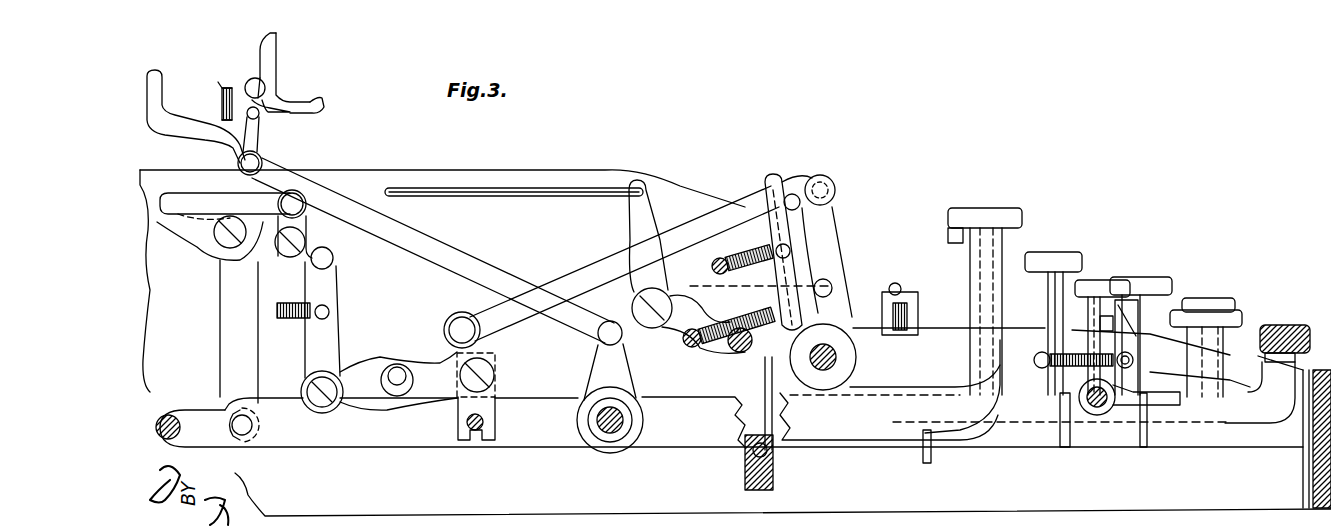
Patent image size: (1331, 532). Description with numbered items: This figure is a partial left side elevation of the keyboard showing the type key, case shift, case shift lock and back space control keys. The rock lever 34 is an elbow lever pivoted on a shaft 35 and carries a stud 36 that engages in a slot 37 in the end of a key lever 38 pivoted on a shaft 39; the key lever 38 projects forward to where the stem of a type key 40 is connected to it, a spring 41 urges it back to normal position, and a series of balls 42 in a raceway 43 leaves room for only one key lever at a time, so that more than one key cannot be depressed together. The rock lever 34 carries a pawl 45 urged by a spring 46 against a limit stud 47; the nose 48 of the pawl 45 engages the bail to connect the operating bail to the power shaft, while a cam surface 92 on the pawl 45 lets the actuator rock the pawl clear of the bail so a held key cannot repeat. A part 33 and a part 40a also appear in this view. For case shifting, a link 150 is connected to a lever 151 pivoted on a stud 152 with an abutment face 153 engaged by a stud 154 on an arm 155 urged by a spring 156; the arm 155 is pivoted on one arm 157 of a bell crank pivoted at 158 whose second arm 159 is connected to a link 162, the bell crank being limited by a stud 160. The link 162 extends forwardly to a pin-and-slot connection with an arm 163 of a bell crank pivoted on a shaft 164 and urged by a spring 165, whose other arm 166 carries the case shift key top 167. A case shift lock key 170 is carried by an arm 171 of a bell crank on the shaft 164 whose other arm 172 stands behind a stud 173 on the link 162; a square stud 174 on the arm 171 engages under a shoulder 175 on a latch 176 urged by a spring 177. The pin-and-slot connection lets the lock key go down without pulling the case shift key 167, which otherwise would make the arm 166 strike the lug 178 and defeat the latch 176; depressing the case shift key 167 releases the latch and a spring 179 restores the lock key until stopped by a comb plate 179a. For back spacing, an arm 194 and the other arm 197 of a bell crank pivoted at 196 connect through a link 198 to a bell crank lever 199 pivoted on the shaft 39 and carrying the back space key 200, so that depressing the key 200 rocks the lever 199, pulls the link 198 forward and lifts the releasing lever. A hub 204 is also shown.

The hook lever 33 is at (152, 100).
The rock lever 34 is at (228, 325).
The shaft 35 is at (170, 416).
The stud 36 is at (251, 428).
The slot 37 is at (232, 425).
The key lever 38 is at (422, 445).
The shaft 39 is at (474, 431).
The type key 40 is at (948, 232).
The key button bracket 40a is at (1267, 374).
The spring 41 is at (893, 305).
The balls 42 is at (764, 452).
The raceway 43 is at (748, 442).
The pawl 45 is at (267, 63).
The spring 46 is at (226, 94).
The limit stud 47 is at (258, 117).
The nose 48 is at (311, 93).
The cam surface 92 is at (264, 44).
The link 150 is at (197, 211).
The lever 151 is at (308, 205).
The stud 152 is at (285, 254).
The abutment face 153 is at (309, 229).
The stud 154 is at (330, 258).
The arm 155 is at (325, 279).
The spring 156 is at (294, 303).
The arm of bell crank lever 157 is at (360, 390).
The pivot 158 is at (490, 375).
The arm of bell crank lever 159 is at (481, 331).
The stud 160 is at (397, 373).
The link 162 is at (573, 288).
The arm of bell crank lever 163 is at (833, 231).
The shaft 164 is at (836, 360).
The spring 165 is at (717, 328).
The arm of bell crank lever 166 is at (1036, 337).
The case shift key top 167 is at (1178, 302).
The case shift lock key 170 is at (1100, 284).
The arm of bell crank lever 171 is at (962, 382).
The arm of bell crank lever 172 is at (770, 196).
The stud 173 is at (790, 188).
The square stud 174 is at (1100, 322).
The shoulder 175 is at (1117, 332).
The latch 176 is at (1138, 348).
The spring 177 is at (1079, 405).
The lug 178 is at (1181, 398).
The spring 179 is at (740, 258).
The comb plate 179a is at (935, 294).
The arm of bell crank lever 194 is at (210, 244).
The pivot 196 is at (232, 249).
The arm of bell crank lever 197 is at (235, 173).
The link 198 is at (450, 256).
The bell crank lever 199 is at (612, 372).
The back space key 200 is at (990, 207).
The hub 204 is at (625, 420).